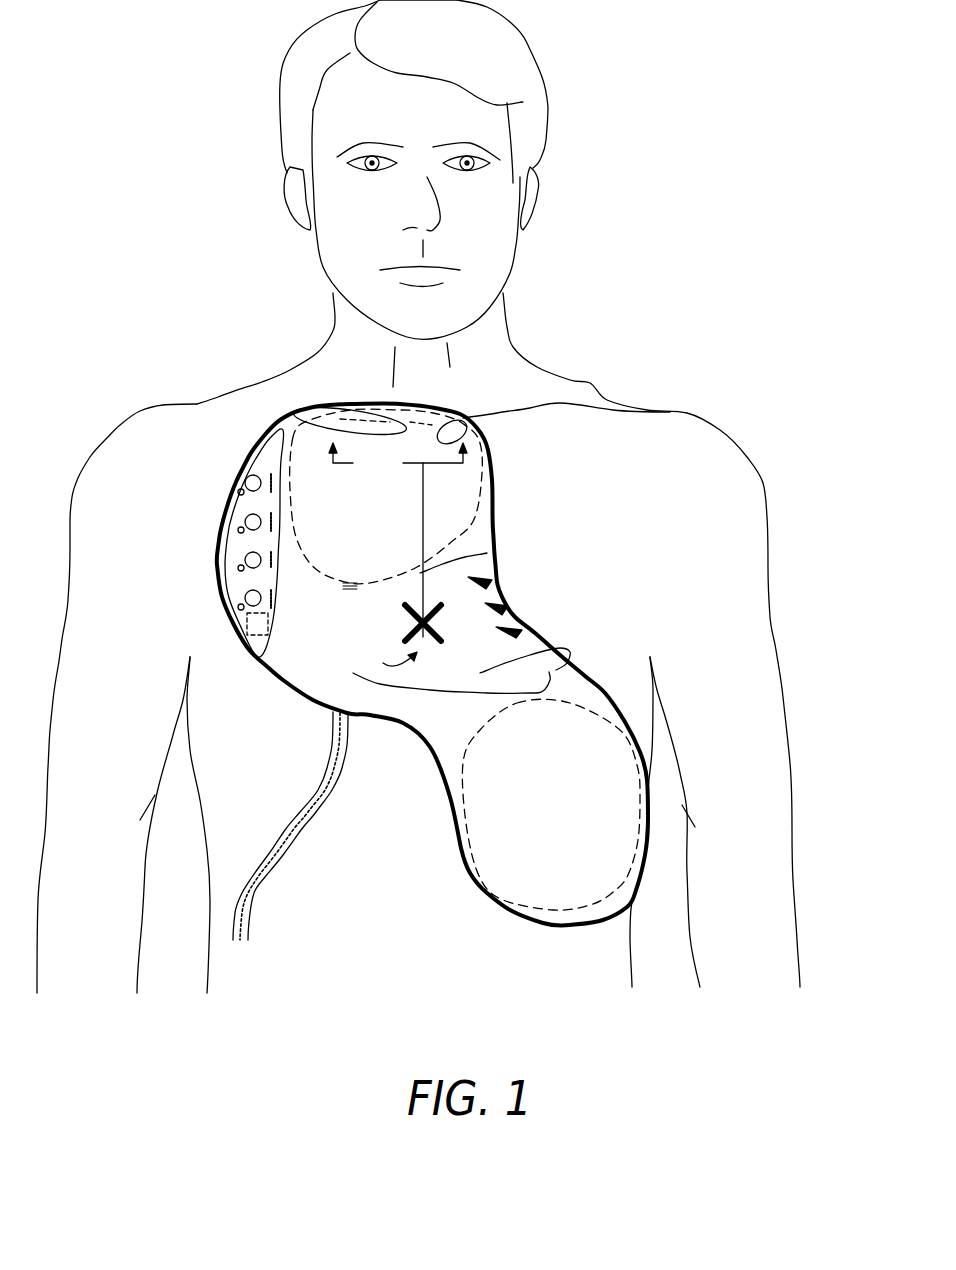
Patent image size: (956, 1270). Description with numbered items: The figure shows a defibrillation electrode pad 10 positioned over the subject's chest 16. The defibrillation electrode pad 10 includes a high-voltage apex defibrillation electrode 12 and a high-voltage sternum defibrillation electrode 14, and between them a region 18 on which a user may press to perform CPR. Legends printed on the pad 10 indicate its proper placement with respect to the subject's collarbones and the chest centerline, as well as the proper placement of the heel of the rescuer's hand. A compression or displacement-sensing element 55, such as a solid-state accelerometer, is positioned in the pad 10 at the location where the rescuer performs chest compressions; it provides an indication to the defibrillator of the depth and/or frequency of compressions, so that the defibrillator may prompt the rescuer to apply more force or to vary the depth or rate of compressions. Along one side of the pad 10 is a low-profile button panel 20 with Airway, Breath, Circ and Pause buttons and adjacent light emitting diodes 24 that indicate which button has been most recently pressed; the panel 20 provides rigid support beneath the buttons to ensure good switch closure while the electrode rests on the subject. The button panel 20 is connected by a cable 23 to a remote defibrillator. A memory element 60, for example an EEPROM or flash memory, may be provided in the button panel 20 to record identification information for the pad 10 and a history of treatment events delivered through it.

The defibrillation electrode pad 10 is at (493, 523).
The high-voltage apex defibrillation electrode 12 is at (470, 483).
The high-voltage sternum defibrillation electrode 14 is at (580, 730).
The subject's chest 16 is at (603, 583).
The region 18 is at (510, 613).
The low-profile button panel 20 is at (237, 550).
The cable 23 is at (262, 880).
The light emitting diodes 24 is at (240, 530).
The displacement-sensing element 55 is at (447, 622).
The memory element 60 is at (257, 623).